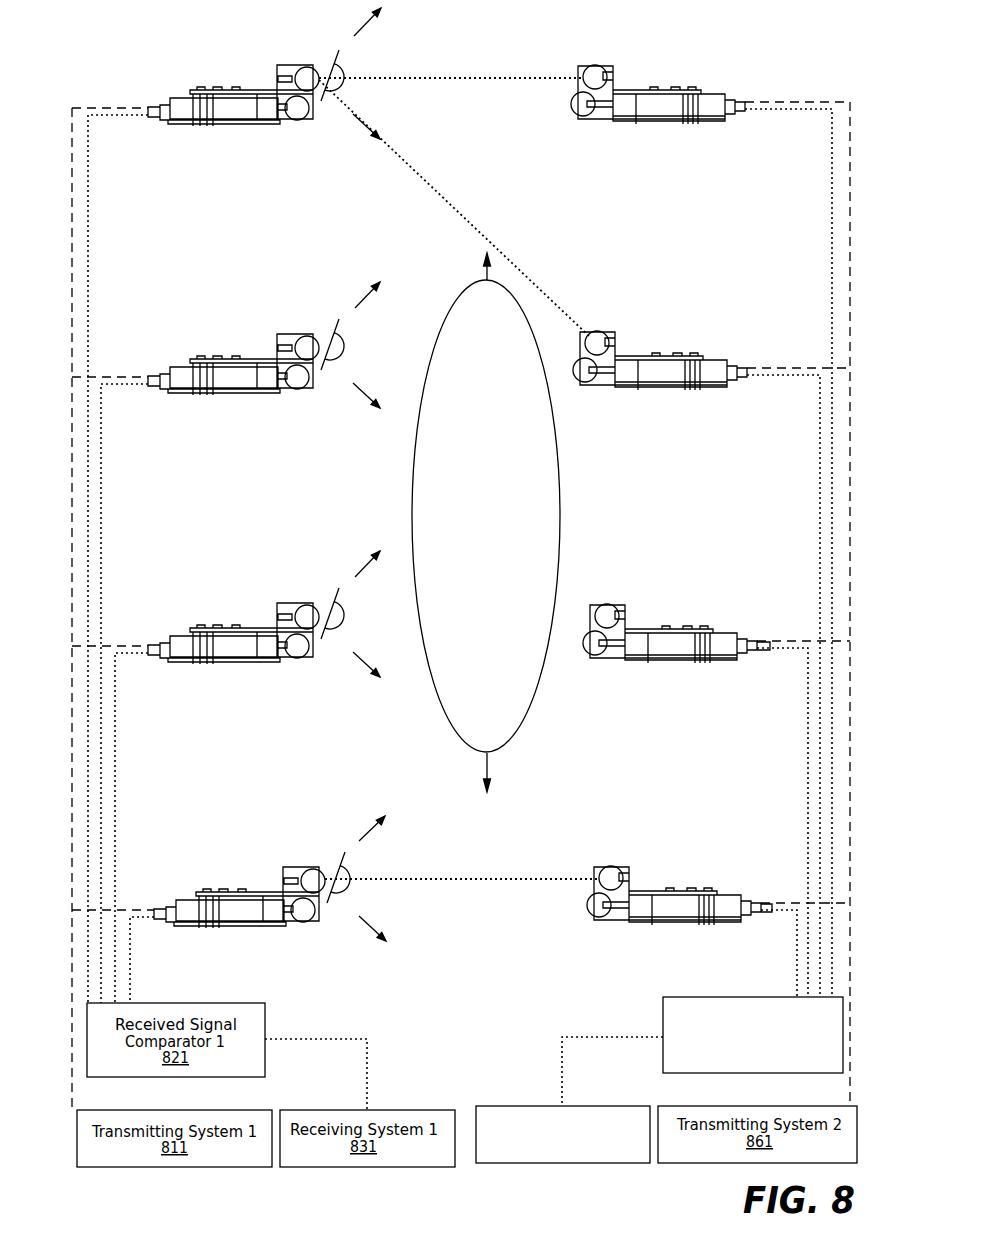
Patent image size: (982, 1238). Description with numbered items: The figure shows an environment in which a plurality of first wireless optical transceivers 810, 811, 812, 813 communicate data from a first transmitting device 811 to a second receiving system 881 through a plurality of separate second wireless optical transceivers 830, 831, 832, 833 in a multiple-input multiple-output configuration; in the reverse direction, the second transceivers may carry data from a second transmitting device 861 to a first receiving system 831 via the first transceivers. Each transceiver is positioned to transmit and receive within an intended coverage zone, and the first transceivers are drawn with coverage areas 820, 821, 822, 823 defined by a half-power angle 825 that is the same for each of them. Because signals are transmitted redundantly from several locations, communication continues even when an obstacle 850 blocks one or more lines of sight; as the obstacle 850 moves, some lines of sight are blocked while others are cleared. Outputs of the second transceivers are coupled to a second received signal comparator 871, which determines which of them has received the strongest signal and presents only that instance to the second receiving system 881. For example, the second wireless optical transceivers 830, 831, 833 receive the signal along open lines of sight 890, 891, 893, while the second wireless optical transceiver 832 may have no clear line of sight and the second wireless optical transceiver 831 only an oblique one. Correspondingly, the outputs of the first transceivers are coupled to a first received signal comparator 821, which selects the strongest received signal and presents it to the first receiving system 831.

The first wireless optical transceiver 810 is at (278, 66).
The first wireless optical transceiver 811 is at (278, 334).
The first wireless optical transceiver 812 is at (278, 603).
The first wireless optical transceiver 813 is at (284, 867).
The coverage area 820 is at (352, 32).
The coverage area 821 is at (352, 305).
The coverage area 822 is at (352, 571).
The coverage area 823 is at (356, 836).
The half-power angle 825 is at (344, 75).
The second wireless optical transceiver 830 is at (612, 63).
The second wireless optical transceiver 831 is at (612, 332).
The second wireless optical transceiver 832 is at (620, 604).
The second wireless optical transceiver 833 is at (622, 866).
The obstacle 850 is at (412, 488).
The second transmitting device 861 is at (130, 106).
The second received signal comparator 871 is at (753, 1035).
The second receiving system 881 is at (563, 1134).
The open line of sight 890 is at (466, 77).
The open line of sight 891 is at (468, 230).
The open line of sight 893 is at (477, 878).